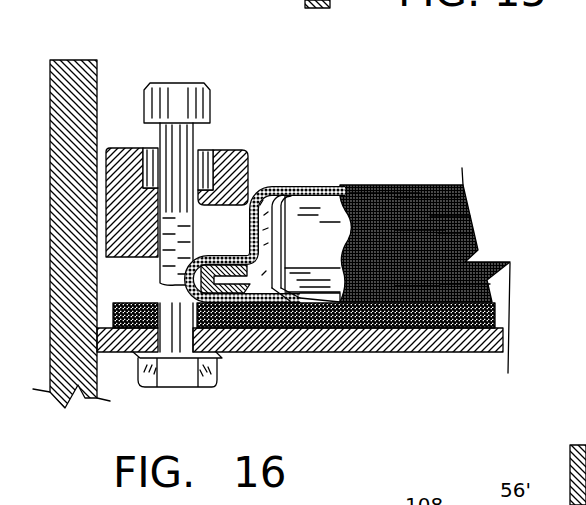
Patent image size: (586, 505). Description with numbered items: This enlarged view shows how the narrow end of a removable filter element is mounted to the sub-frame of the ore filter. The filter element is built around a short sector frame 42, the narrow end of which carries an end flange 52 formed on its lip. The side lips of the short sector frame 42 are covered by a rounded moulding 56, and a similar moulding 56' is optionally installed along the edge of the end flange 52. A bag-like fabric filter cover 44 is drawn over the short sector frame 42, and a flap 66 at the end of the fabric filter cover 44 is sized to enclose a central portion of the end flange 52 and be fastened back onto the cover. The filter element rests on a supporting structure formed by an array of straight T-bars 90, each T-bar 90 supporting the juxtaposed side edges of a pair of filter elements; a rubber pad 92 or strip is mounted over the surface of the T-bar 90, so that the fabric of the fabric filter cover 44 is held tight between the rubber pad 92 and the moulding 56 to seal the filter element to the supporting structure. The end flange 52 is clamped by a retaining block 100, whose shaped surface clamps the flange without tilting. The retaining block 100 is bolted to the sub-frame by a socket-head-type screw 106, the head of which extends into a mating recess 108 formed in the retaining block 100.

The short sector frame 42 is at (319, 210).
The fabric filter cover 44 is at (420, 208).
The end flange 52 is at (261, 313).
The rounded moulding 56 is at (326, 344).
The moulding 56' is at (225, 348).
The flap 66 is at (289, 301).
The T-bar 90 is at (443, 352).
The rubber pad 92 is at (455, 320).
The retaining block 100 is at (240, 150).
The socket-head-type screw 106 is at (165, 83).
The recess 108 is at (200, 150).